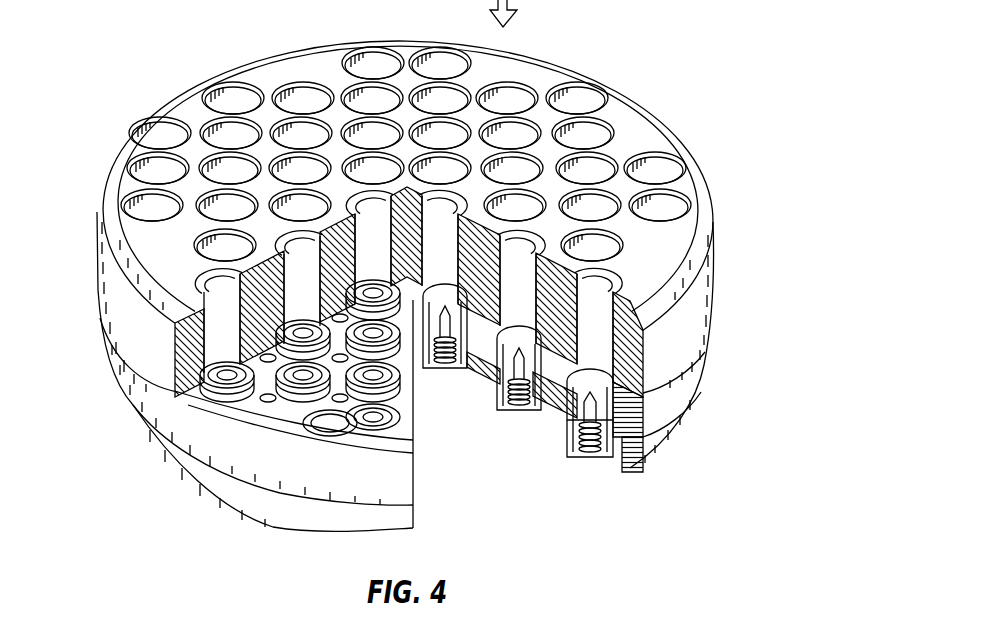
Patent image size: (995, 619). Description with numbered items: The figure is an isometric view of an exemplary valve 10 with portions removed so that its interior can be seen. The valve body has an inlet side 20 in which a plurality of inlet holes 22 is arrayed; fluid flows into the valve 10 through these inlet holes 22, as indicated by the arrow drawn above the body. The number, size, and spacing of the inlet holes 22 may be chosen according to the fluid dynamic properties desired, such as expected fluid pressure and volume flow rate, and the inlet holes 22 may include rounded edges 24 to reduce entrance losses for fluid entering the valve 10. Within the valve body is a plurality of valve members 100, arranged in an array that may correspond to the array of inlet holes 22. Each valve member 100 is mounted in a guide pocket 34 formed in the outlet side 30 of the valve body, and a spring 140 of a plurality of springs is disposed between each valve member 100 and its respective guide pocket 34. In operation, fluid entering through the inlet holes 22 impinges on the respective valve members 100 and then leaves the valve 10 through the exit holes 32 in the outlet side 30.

The valve 10 is at (124, 42).
The inlet side 20 is at (100, 207).
The inlet holes 22 is at (572, 98).
The rounded edges 24 is at (645, 157).
The outlet side 30 is at (123, 380).
The exit holes 32 is at (333, 428).
The guide pocket 34 is at (497, 386).
The valve member 100 is at (585, 388).
The spring 140 is at (585, 462).